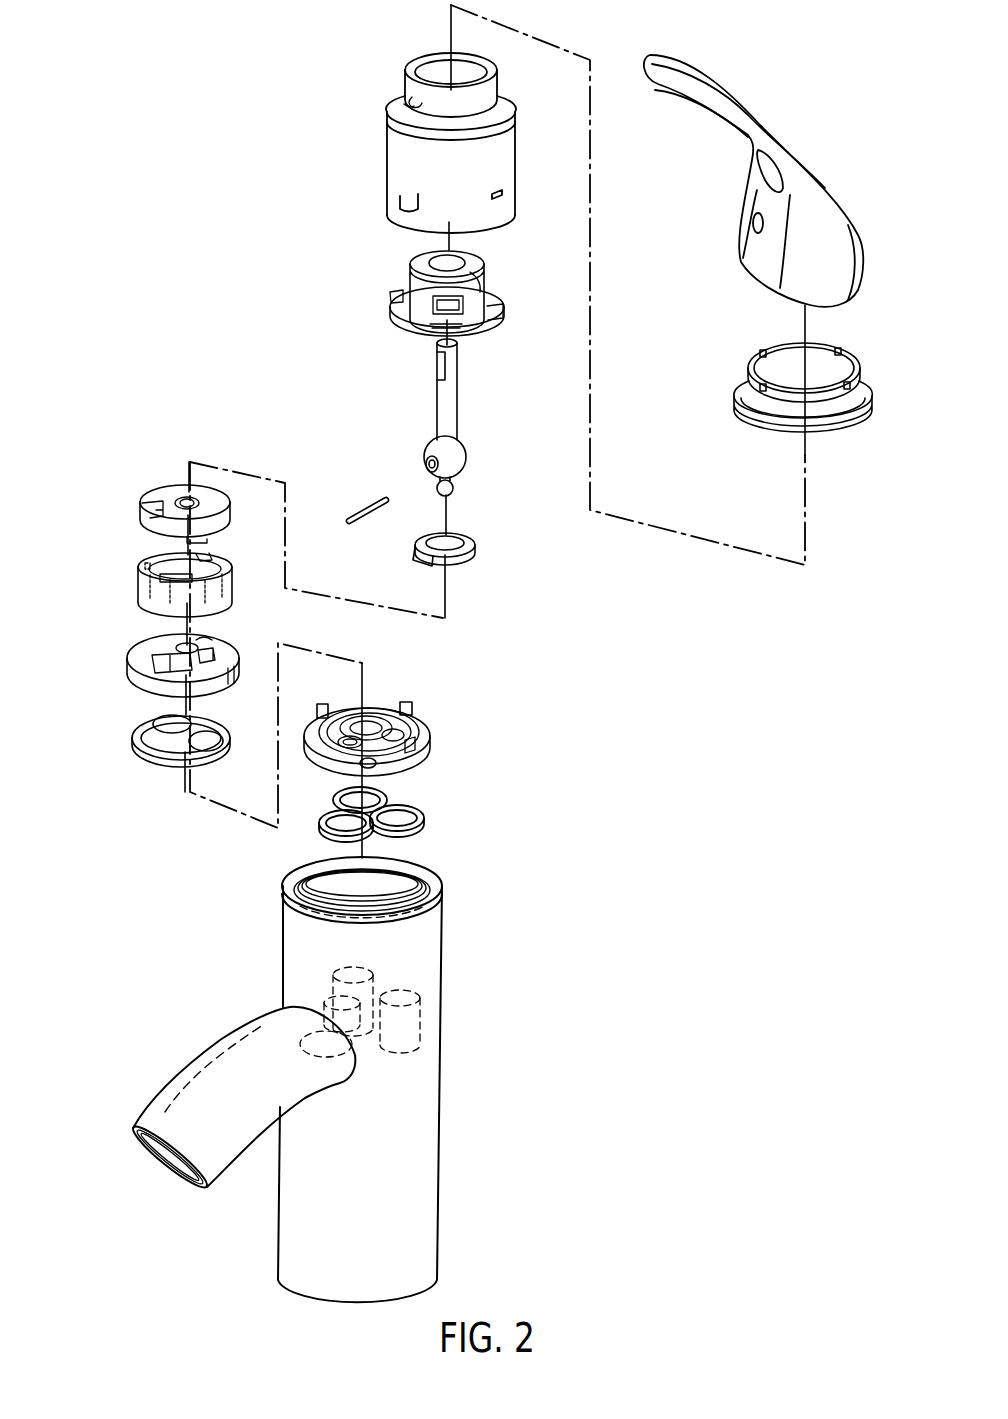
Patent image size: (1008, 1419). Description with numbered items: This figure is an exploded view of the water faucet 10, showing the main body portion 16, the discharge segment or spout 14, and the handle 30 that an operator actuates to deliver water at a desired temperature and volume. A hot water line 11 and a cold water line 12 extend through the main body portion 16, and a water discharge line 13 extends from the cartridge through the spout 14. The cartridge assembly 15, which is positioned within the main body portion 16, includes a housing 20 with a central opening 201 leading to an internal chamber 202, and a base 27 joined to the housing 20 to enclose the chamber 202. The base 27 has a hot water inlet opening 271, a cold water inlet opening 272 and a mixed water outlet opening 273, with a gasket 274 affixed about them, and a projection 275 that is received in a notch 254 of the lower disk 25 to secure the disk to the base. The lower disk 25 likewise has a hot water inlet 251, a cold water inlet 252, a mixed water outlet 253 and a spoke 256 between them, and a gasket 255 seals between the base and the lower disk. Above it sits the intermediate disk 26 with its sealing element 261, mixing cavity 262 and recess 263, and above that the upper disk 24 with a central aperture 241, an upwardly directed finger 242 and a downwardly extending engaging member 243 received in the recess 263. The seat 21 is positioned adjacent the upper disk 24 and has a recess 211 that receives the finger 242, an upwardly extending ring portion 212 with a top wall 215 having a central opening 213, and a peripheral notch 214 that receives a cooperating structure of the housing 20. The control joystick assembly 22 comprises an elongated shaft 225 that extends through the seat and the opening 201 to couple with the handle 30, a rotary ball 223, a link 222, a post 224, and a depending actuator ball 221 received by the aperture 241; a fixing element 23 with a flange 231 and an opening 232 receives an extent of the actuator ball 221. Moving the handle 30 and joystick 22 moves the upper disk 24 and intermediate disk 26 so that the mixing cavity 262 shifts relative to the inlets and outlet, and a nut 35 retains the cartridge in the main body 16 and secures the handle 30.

The water faucet 10 is at (533, 1052).
The hot water line 11 is at (340, 975).
The cold water line 12 is at (410, 1000).
The water discharge line 13 is at (330, 1000).
The discharge segment or spout 14 is at (340, 1057).
The cartridge assembly 15 is at (190, 402).
The main body portion 16 is at (410, 1213).
The housing 20 is at (335, 112).
The central opening 201 is at (437, 70).
The internal chamber 202 is at (445, 117).
The seat 21 is at (360, 297).
The recess 211 is at (443, 322).
The upwardly extending ring portion 212 is at (424, 280).
The central opening 213 is at (440, 256).
The peripheral notch 214 is at (496, 305).
The top wall 215 is at (470, 272).
The control joystick assembly 22 is at (476, 412).
The actuator ball 221 is at (455, 490).
The link 222 is at (462, 468).
The rotary ball 223 is at (427, 455).
The post 224 is at (371, 513).
The elongated shaft 225 is at (440, 403).
The fixing element 23 is at (468, 568).
The flange 231 is at (470, 538).
The opening 232 is at (432, 552).
The upper disk 24 is at (96, 487).
The central aperture 241 is at (187, 490).
The upwardly directed finger 242 is at (143, 510).
The downwardly extending engaging member 243 is at (220, 536).
The lower disk 25 is at (90, 667).
The hot water inlet 251 is at (178, 640).
The cold water inlet 252 is at (205, 660).
The mixed water outlet 253 is at (140, 672).
The notch 254 is at (227, 682).
The gasket 255 is at (144, 765).
The spoke 256 is at (200, 636).
The intermediate disk 26 is at (93, 578).
The sealing element 261 is at (185, 565).
The mixing cavity 262 is at (148, 600).
The recess 263 is at (210, 562).
The base 27 is at (455, 726).
The hot water inlet opening 271 is at (368, 707).
The cold water inlet opening 272 is at (380, 732).
The mixed water outlet opening 273 is at (372, 747).
The sealing element or gasket 274 is at (432, 820).
The projection 275 is at (420, 742).
The handle 30 is at (826, 147).
The nut 35 is at (728, 364).